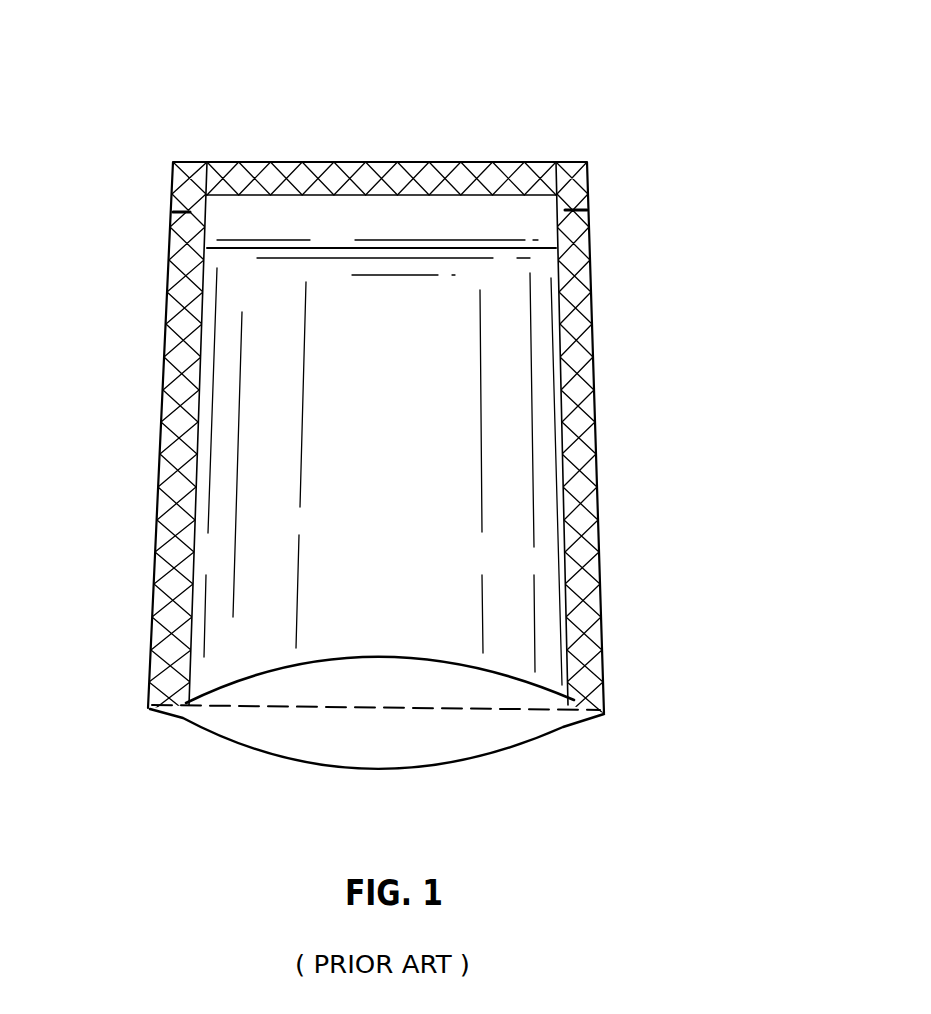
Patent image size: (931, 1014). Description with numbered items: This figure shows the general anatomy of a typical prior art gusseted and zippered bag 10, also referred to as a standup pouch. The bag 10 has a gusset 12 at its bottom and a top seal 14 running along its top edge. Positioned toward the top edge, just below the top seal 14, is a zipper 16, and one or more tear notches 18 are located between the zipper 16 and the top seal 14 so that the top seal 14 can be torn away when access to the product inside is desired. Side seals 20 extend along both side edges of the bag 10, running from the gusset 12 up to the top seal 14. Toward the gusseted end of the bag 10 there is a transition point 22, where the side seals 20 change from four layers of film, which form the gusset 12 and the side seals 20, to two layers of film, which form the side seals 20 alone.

The bag 10 is at (424, 124).
The gusset 12 is at (382, 733).
The top seal 14 is at (255, 148).
The zipper 16 is at (604, 247).
The tear notch 18 is at (604, 208).
The side seals 20 is at (151, 411).
The transition point 22 is at (613, 608).